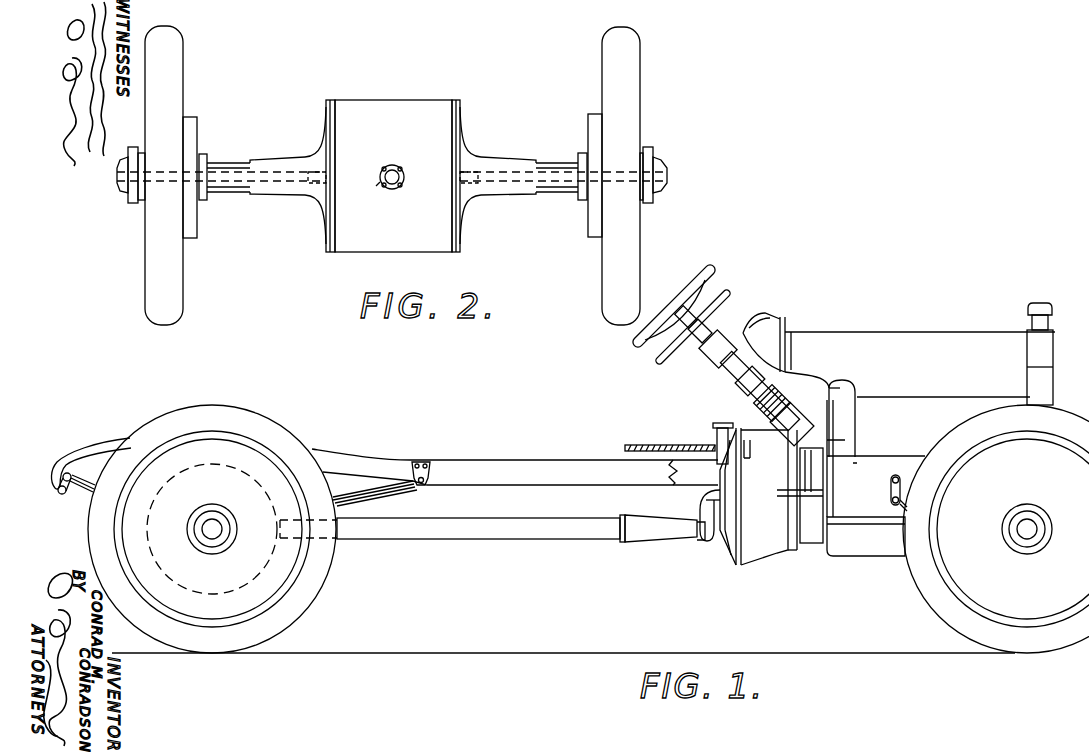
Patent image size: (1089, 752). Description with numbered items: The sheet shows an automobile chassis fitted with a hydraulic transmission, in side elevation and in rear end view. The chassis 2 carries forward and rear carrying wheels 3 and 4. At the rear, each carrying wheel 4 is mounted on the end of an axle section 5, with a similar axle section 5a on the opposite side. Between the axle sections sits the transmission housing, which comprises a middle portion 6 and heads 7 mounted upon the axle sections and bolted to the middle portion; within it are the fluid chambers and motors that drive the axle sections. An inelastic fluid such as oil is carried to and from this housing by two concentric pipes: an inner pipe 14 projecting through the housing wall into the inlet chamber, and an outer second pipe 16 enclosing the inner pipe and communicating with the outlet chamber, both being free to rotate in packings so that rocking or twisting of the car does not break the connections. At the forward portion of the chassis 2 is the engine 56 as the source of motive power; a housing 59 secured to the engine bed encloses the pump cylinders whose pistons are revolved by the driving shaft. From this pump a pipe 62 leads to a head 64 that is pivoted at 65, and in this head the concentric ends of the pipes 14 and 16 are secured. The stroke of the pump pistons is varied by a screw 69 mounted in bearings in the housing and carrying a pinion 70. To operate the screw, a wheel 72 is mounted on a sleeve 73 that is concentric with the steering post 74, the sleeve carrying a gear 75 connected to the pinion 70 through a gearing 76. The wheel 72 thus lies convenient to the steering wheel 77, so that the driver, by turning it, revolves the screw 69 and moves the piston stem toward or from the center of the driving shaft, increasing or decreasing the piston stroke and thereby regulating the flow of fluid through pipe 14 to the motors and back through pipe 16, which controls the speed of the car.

In FIG. 1, the chassis 2 is at (508, 467).
In FIG. 1, the forward carrying wheel 3 is at (945, 608).
In FIG. 2, the rear carrying wheel 4 is at (150, 289).
In FIG. 1, the rear carrying wheel 4 is at (303, 600).
In FIG. 2, the axle section 5 is at (476, 182).
In FIG. 2, the axle section 5a is at (300, 196).
In FIG. 2, the middle portion of the transmission housing 6 is at (385, 103).
In FIG. 2, the head 7 is at (326, 116).
In FIG. 2, the pipe 14 is at (378, 190).
In FIG. 2, the second pipe 16 is at (400, 168).
In FIG. 1, the second pipe 16 is at (547, 536).
In FIG. 1, the engine 56 is at (835, 403).
In FIG. 1, the housing 59 is at (773, 553).
In FIG. 1, the pipe 62 is at (700, 500).
In FIG. 1, the head 64 is at (663, 540).
In FIG. 1, the pivot 65 is at (705, 533).
In FIG. 1, the screw 69 is at (716, 448).
In FIG. 1, the pinion 70 is at (722, 425).
In FIG. 1, the wheel 72 is at (657, 364).
In FIG. 1, the sleeve 73 is at (737, 373).
In FIG. 1, the steering post 74 is at (805, 435).
In FIG. 1, the gear 75 is at (790, 385).
In FIG. 1, the gearing 76 is at (762, 457).
In FIG. 1, the steering wheel 77 is at (633, 345).